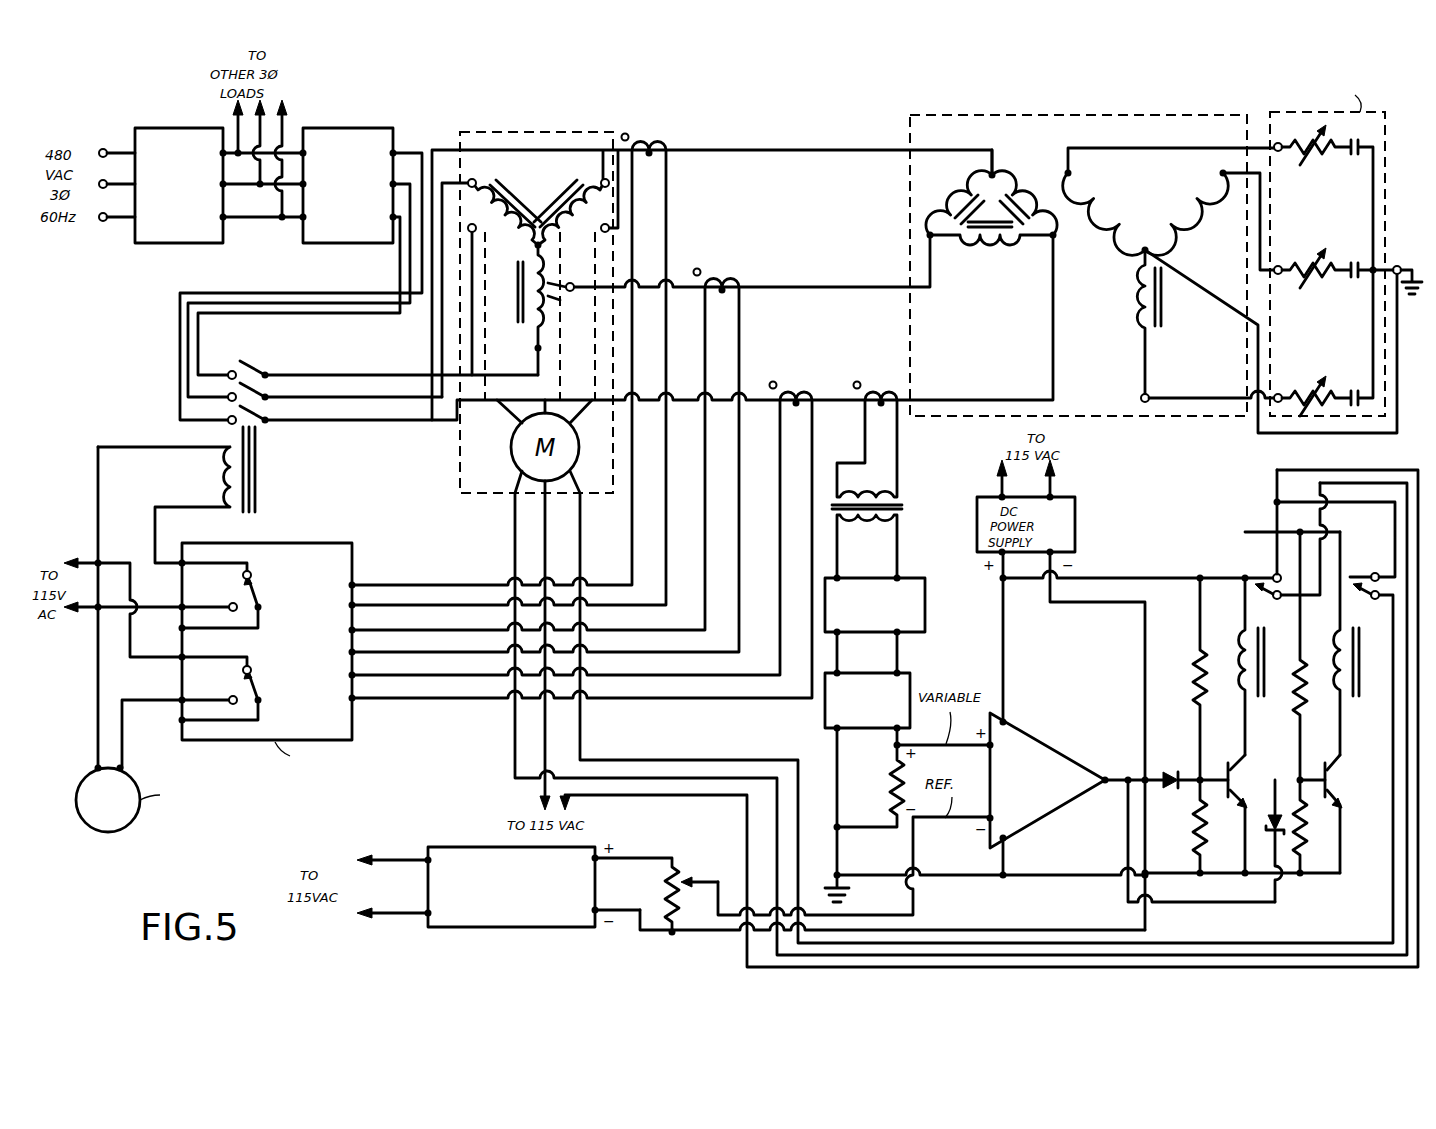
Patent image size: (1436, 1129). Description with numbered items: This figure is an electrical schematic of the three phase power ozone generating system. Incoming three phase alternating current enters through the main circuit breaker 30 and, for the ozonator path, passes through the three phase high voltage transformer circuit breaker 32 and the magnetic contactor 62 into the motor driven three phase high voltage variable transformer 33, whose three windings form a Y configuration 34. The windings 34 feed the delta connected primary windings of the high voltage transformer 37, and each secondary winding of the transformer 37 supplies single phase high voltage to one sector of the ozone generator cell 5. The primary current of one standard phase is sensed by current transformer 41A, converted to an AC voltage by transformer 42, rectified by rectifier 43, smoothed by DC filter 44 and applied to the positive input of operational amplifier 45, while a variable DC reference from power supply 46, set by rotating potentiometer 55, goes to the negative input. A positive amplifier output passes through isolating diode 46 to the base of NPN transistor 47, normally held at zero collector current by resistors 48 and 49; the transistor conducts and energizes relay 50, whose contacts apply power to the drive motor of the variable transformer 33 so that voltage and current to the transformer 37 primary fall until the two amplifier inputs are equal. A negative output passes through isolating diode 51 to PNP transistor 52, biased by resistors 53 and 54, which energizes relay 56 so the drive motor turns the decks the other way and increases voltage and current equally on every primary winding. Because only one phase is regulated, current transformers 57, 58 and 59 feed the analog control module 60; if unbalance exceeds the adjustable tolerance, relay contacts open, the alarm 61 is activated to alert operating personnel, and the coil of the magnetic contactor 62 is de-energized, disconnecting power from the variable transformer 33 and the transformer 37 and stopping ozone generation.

The main circuit breaker 30 is at (150, 129).
The three phase high voltage transformer circuit breaker 32 is at (355, 128).
The three phase high voltage variable transformer 33 is at (535, 130).
The three phase Y configuration windings 34 is at (531, 197).
The high voltage transformer 37 is at (946, 108).
The ozone generator cell 5 is at (1388, 118).
The current transformer 57 is at (677, 132).
The current transformer 58 is at (750, 265).
The current transformer 59 is at (805, 364).
The current transformer 41A is at (876, 363).
The transformer 42 is at (902, 496).
The rectifier 43 is at (913, 578).
The DC filter 44 is at (914, 678).
The operational amplifier 45 is at (1040, 745).
The power supply / isolating diode 46 is at (1168, 768).
The NPN transistor 47 is at (1237, 764).
The resistor 48 is at (1193, 675).
The resistor 49 is at (1194, 852).
The relay 50 is at (1239, 590).
The isolating diode 51 is at (1270, 820).
The PNP transistor 52 is at (1349, 779).
The biasing resistor 53 is at (1304, 840).
The biasing resistor 54 is at (1297, 702).
The potentiometer 55 is at (692, 858).
The relay 56 is at (1336, 603).
The analog control module 60 is at (350, 542).
The alarm 61 is at (145, 805).
The magnetic contactor 62 is at (273, 438).